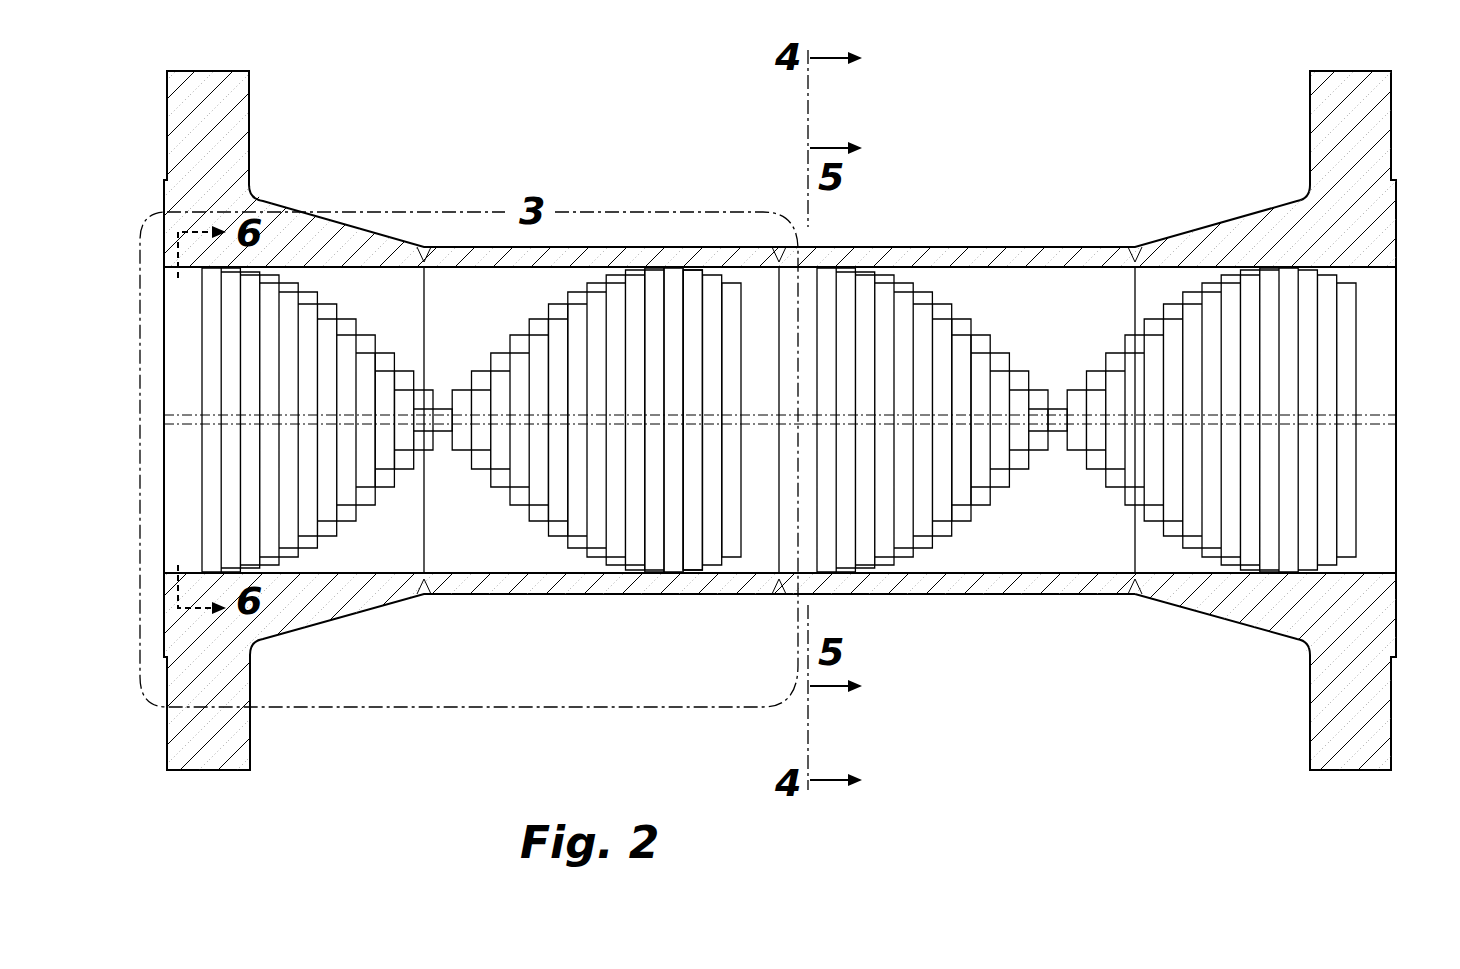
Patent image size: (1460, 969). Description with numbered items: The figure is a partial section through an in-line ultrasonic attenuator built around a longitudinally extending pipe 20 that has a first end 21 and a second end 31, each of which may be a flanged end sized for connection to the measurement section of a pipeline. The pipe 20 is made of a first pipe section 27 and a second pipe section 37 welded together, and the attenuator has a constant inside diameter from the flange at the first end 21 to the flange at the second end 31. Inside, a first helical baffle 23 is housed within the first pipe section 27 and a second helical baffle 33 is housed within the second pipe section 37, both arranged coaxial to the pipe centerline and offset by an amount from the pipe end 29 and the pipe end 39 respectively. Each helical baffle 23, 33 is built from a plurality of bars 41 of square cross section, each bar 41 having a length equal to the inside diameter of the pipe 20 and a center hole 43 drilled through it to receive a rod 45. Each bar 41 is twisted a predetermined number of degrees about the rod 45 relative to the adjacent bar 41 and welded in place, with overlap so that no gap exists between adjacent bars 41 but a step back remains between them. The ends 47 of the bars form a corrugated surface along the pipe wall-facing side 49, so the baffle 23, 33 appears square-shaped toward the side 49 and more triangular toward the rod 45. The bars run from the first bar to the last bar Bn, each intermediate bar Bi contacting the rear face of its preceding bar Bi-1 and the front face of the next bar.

The longitudinally extending pipe 20 is at (1038, 596).
The first end 21 is at (252, 90).
The first helical baffle 23 is at (466, 527).
The first pipe section 27 is at (568, 595).
The pipe end 29 is at (160, 513).
The second end 31 is at (1308, 110).
The second helical baffle 33 is at (1028, 540).
The second pipe section 37 is at (928, 247).
The pipe end 39 is at (1398, 410).
The bar 41 is at (560, 320).
The center hole 43 is at (1350, 427).
The rod 45 is at (1058, 432).
The ends of the bars 47 is at (379, 500).
The pipe wall-facing side 49 is at (961, 320).
The last bar Bn is at (728, 290).
The preceding bar Bi-1 is at (652, 568).
The i-th bar Bi is at (658, 552).